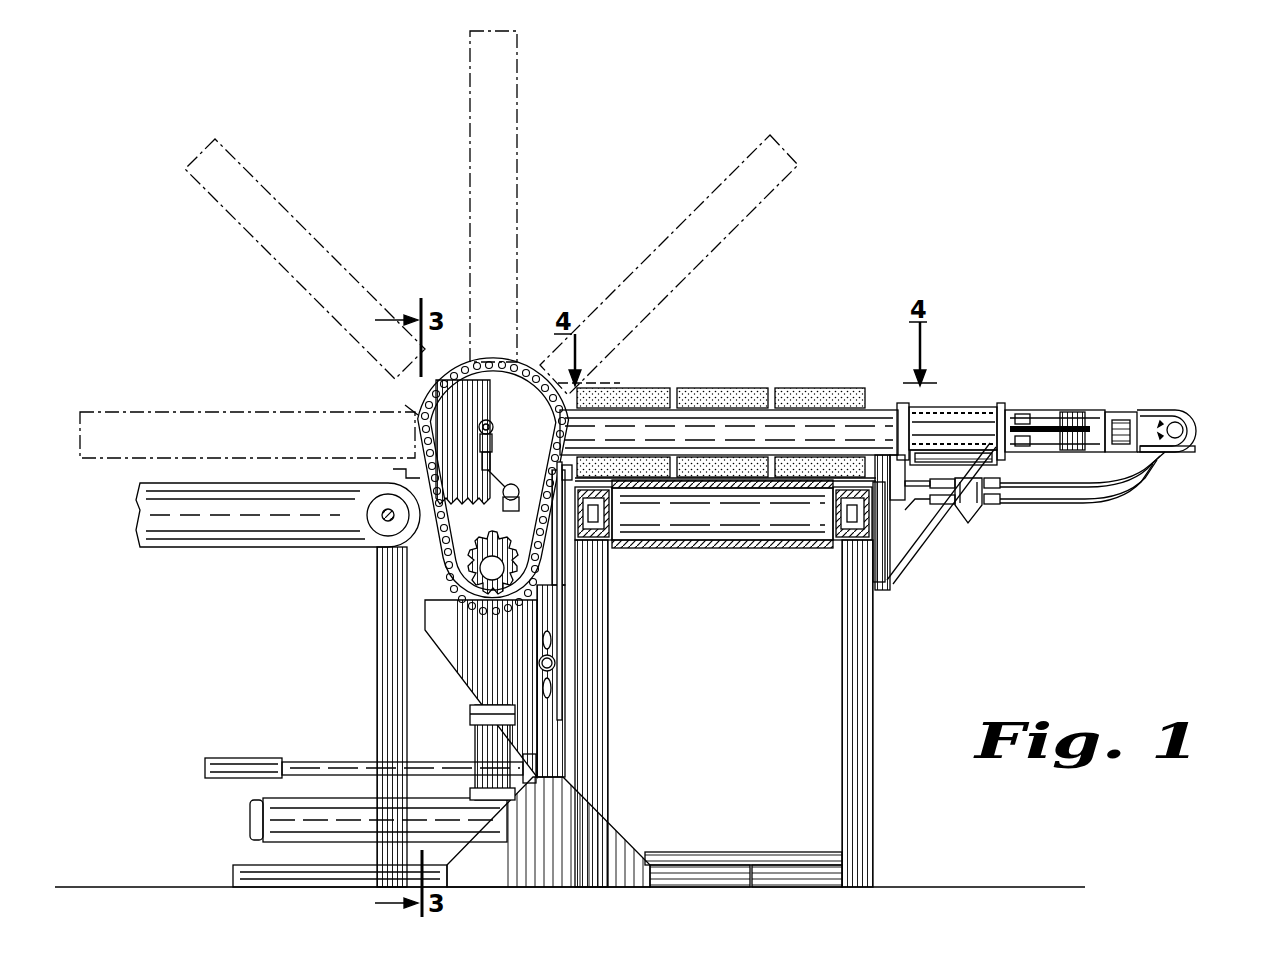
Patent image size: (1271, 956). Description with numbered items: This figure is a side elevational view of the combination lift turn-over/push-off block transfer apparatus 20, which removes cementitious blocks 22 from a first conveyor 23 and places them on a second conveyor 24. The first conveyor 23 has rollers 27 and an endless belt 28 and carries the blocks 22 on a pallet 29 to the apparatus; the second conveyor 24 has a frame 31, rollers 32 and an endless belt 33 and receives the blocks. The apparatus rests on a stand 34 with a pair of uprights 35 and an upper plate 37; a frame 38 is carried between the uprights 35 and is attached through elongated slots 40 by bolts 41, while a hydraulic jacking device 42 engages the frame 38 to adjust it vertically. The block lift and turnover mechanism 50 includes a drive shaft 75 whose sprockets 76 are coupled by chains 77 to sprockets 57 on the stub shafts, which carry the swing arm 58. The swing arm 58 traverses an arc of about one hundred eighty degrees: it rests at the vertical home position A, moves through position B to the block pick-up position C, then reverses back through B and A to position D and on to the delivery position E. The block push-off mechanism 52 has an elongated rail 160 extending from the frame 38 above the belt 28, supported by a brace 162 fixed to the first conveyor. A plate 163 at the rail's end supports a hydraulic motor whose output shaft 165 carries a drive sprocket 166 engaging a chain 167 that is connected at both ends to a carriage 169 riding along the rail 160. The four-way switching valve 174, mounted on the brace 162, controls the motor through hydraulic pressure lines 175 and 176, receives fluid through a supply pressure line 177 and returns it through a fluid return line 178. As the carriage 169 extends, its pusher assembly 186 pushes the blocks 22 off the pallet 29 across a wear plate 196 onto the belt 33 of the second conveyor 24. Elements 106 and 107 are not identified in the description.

The block transfer apparatus 20 is at (404, 404).
The cementitious blocks 22 is at (772, 392).
The first conveyor 23 is at (885, 668).
The second conveyor 24 is at (226, 558).
The rollers 27 is at (678, 548).
The endless belt 28 is at (762, 548).
The pallet 29 is at (820, 478).
The frame 31 is at (386, 606).
The rollers 32 is at (368, 512).
The endless belt 33 is at (288, 549).
The stand 34 is at (240, 865).
The uprights 35 is at (556, 708).
The upper plate 37 is at (556, 663).
The frame 38 is at (466, 652).
The elongated slots 40 is at (552, 645).
The bolts 41 is at (553, 683).
The hydraulic jacking device 42 is at (472, 737).
The block lift and turnover mechanism 50 is at (652, 410).
The block push-off mechanism 52 is at (1070, 398).
The sprocket 57 is at (500, 352).
The swing arm 58 is at (903, 412).
The drive shaft 75 is at (493, 555).
The sprocket 76 is at (448, 568).
The chains 77 is at (418, 430).
The connector 106 is at (512, 484).
The clevis 107 is at (493, 432).
The elongated rail 160 is at (935, 412).
The brace 162 is at (893, 576).
The plate 163 is at (1196, 452).
The output shaft 165 is at (1198, 430).
The drive sprocket 166 is at (1180, 408).
The chain 167 is at (1148, 410).
The carriage 169 is at (1048, 410).
The 4-way switching valve 174 is at (984, 512).
The hydraulic pressure line 175 is at (1140, 478).
The hydraulic pressure line 176 is at (1130, 498).
The supply pressure line 177 is at (950, 505).
The fluid return line 178 is at (942, 488).
The pusher assembly 186 is at (1010, 464).
The wear plate 196 is at (393, 469).
The home position A is at (516, 82).
The intermediate position B is at (786, 152).
The block pick-up position C is at (803, 404).
The intermediate position D is at (288, 207).
The delivery position E is at (168, 412).